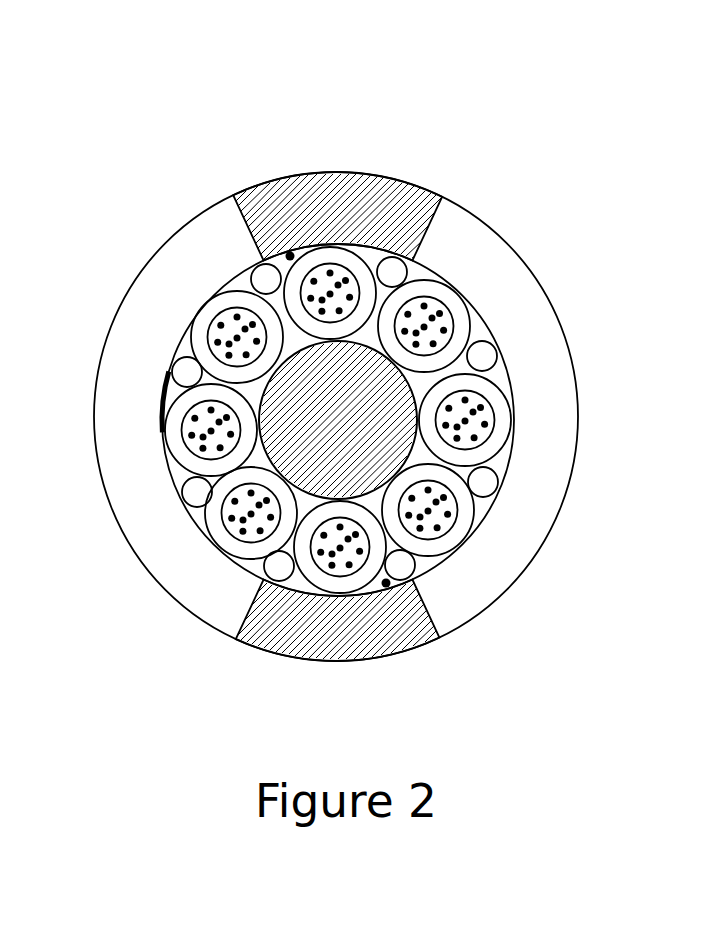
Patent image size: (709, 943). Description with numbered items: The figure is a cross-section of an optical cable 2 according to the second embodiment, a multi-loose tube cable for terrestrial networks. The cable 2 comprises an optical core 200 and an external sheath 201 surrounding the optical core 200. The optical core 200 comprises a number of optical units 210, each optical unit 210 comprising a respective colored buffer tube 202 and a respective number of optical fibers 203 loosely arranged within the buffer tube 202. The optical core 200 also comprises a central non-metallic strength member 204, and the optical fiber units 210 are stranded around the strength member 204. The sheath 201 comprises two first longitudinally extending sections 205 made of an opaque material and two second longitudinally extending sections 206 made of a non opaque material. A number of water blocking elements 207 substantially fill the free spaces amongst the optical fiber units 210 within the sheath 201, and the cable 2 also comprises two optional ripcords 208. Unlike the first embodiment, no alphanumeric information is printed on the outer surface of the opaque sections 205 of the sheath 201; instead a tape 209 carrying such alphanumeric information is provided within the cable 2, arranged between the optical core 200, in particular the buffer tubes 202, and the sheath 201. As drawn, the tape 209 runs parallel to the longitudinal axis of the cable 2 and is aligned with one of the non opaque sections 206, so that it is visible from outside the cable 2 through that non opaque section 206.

The optical cable 2 is at (145, 113).
The optical core 200 is at (202, 290).
The external sheath 201 is at (437, 167).
The colored buffer tube 202 is at (457, 292).
The optical fibers 203 is at (443, 328).
The central non-metallic strength member 204 is at (415, 452).
The first longitudinally extending sections 205 is at (350, 173).
The second longitudinally extending sections 206 is at (118, 310).
The water blocking elements 207 is at (498, 490).
The ripcords 208 is at (290, 256).
The tape 209 is at (160, 403).
The optical unit 210 is at (475, 313).